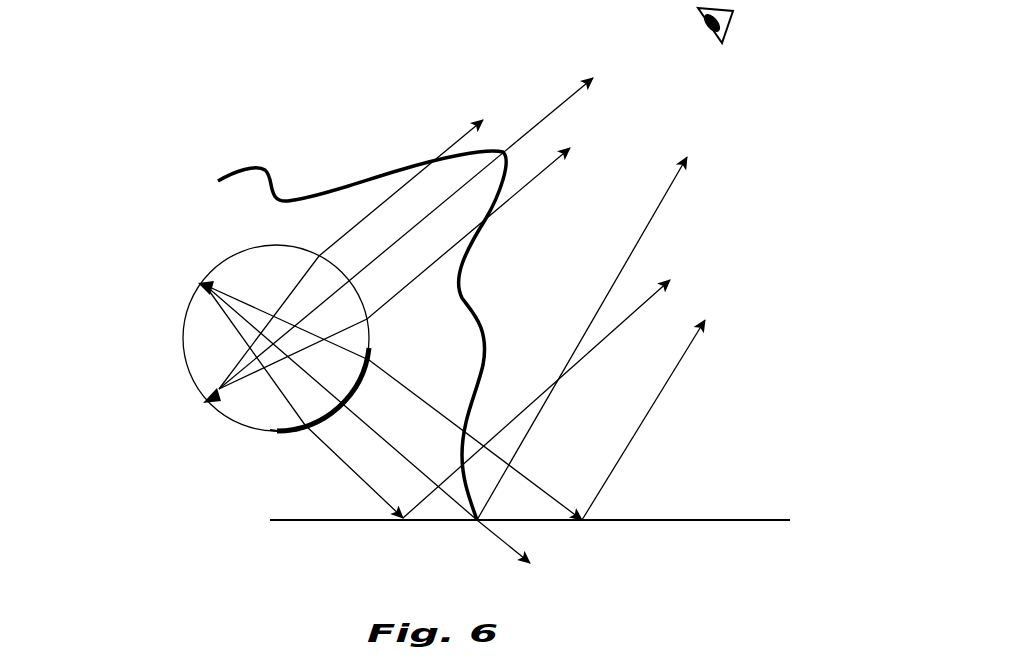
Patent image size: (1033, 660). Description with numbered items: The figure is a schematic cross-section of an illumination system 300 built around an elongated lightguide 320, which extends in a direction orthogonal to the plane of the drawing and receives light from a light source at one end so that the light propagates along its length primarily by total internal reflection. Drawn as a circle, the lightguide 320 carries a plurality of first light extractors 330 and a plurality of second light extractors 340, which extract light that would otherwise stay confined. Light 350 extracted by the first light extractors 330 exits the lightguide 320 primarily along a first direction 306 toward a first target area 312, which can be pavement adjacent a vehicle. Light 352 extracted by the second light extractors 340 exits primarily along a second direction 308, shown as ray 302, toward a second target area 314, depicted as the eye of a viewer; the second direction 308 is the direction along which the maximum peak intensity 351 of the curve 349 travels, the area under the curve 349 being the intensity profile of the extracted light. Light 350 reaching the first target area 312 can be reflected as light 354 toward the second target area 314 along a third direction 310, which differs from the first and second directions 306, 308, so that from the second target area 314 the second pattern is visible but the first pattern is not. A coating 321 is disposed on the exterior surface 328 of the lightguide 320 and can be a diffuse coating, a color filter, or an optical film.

The illumination system 300 is at (133, 140).
The output light ray 302 is at (462, 136).
The first direction 306 is at (512, 545).
The second direction 308 is at (583, 97).
The third direction 310 is at (659, 198).
The first target area 312 is at (716, 519).
The second target area 314 is at (753, 38).
The elongated lightguide 320 is at (198, 252).
The coating 321 is at (285, 434).
The exterior surface 328 is at (187, 364).
The first light extractors 330 is at (196, 282).
The second light extractors 340 is at (200, 404).
The curve 349 is at (335, 190).
The light extracted by the first light extractors 350 is at (410, 390).
The maximum peak intensity 351 is at (505, 150).
The light extracted by the second light extractors 352 is at (345, 233).
The reflected light 354 is at (658, 396).